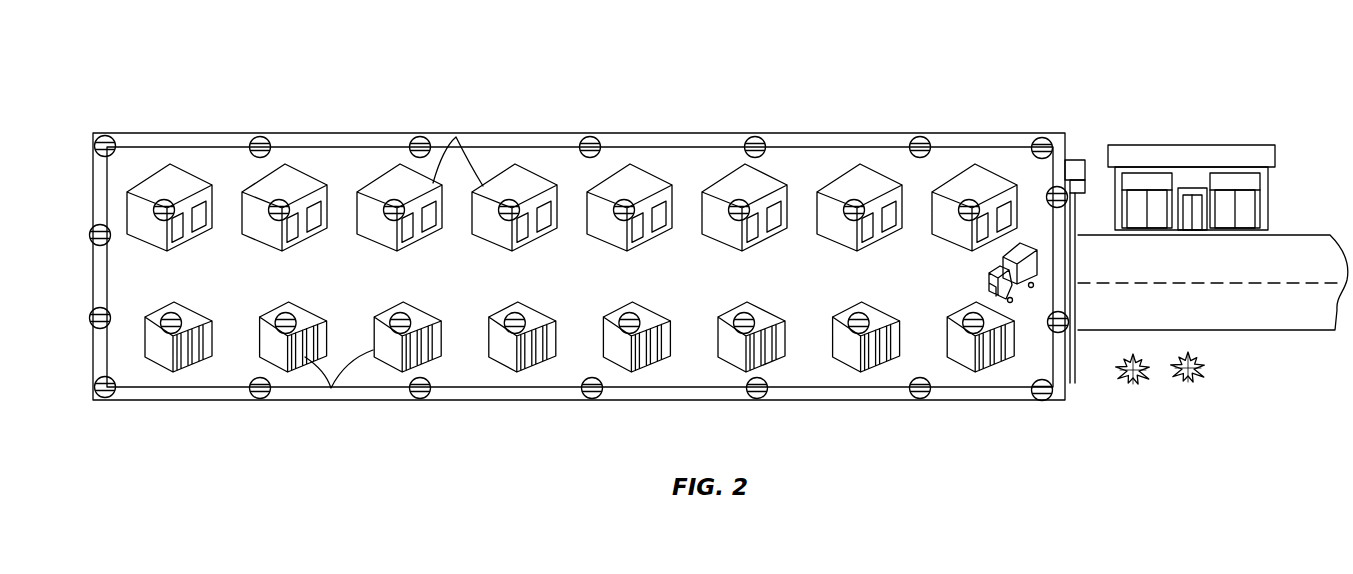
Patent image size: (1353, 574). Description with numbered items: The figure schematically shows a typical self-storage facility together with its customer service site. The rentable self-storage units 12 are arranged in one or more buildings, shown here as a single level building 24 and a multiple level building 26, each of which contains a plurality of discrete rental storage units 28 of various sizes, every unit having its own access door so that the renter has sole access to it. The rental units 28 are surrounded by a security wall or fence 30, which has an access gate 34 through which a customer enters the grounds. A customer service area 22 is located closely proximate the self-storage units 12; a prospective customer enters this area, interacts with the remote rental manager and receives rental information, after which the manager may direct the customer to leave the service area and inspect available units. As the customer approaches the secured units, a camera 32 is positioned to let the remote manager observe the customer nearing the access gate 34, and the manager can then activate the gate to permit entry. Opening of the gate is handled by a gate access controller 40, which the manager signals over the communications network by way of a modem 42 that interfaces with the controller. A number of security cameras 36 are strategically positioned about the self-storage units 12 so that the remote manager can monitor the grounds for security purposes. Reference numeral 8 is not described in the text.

The self-storage units 12 is at (323, 43).
The customer service area 22 is at (1272, 200).
The single level building 24 is at (497, 375).
The multiple level building 26 is at (243, 172).
The rental storage unit 28 is at (456, 137).
The security wall or fence 30 is at (165, 404).
The camera 32 is at (1045, 190).
The access gate 34 is at (1085, 160).
The security cameras 36 is at (90, 235).
The gate access controller 40 is at (1268, 320).
The modem 42 is at (727, 364).
The storage unit 8 is at (193, 358).